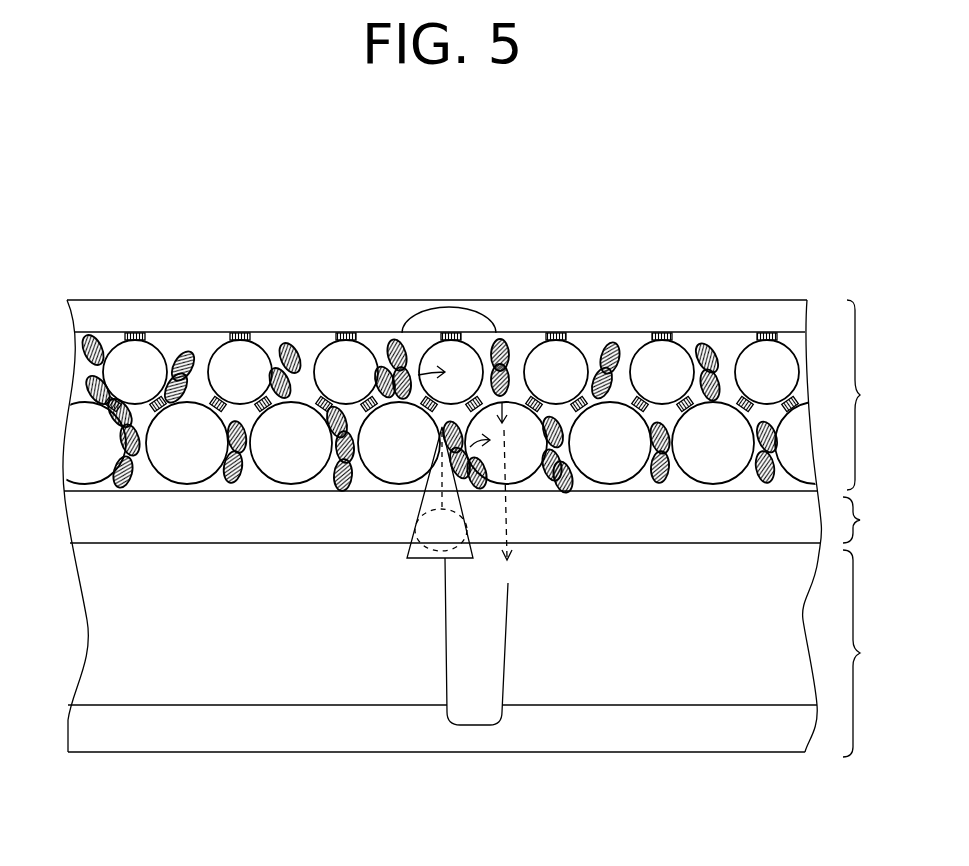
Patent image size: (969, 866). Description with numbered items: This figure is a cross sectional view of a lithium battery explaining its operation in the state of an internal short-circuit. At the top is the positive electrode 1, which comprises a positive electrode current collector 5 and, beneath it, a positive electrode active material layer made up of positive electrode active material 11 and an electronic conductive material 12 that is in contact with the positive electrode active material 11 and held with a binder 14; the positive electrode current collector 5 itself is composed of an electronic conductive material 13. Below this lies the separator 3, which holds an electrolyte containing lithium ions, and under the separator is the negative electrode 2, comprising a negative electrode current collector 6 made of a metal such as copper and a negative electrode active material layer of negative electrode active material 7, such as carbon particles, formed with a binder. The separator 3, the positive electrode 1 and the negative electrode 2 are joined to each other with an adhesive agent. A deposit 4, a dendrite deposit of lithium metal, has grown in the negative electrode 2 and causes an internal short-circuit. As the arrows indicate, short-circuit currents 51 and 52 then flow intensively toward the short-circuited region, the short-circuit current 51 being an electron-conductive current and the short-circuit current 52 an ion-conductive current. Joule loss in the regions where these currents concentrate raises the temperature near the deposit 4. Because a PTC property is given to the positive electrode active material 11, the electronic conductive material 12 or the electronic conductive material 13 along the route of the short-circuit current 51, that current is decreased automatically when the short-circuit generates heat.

The positive electrode 1 is at (475, 395).
The negative electrode 2 is at (479, 653).
The separator 3 is at (479, 520).
The deposit 4 is at (423, 560).
The positive electrode current collector 5 is at (190, 317).
The negative electrode current collector 6 is at (265, 722).
The negative electrode active material 7 is at (538, 680).
The positive electrode active material 11 is at (750, 360).
The electronic conductive material 12 is at (606, 345).
The electronic conductive material 13 is at (583, 315).
The binder 14 is at (553, 338).
The short-circuit current 51 is at (456, 308).
The short-circuit current 52 is at (507, 520).